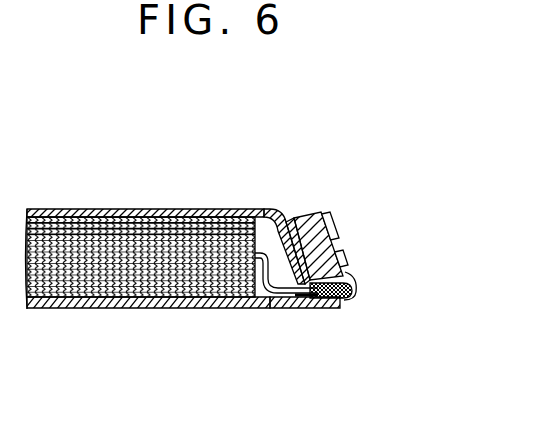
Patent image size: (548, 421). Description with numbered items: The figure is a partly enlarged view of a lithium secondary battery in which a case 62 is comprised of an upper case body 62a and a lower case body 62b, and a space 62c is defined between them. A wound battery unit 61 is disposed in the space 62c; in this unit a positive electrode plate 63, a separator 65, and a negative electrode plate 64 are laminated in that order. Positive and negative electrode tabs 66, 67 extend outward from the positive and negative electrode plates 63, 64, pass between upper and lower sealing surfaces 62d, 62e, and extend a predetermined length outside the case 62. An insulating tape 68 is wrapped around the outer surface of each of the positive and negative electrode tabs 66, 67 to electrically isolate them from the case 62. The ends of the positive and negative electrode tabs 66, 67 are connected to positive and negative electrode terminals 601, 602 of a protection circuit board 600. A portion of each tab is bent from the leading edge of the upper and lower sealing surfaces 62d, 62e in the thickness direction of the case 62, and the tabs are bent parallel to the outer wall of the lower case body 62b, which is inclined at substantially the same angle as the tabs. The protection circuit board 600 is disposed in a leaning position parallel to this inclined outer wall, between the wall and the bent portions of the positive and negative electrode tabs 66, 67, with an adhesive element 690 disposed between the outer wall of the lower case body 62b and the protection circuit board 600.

The wound battery unit 61 is at (190, 160).
The case 62 is at (109, 331).
The upper case body 62a is at (167, 309).
The lower case body 62b is at (61, 209).
The space 62c is at (267, 209).
The upper sealing surface 62d is at (318, 310).
The lower sealing surface 62e is at (350, 281).
The positive electrode plate 63 is at (157, 209).
The negative electrode plate 64 is at (188, 220).
The separator 65 is at (127, 209).
The positive electrode tab 66 is at (270, 301).
The negative electrode tab 67 is at (283, 293).
The insulating tape 68 is at (350, 292).
The protection circuit board 600 is at (326, 216).
The positive electrode terminal 601 is at (382, 239).
The negative electrode terminal 602 is at (347, 257).
The adhesive element 690 is at (288, 212).